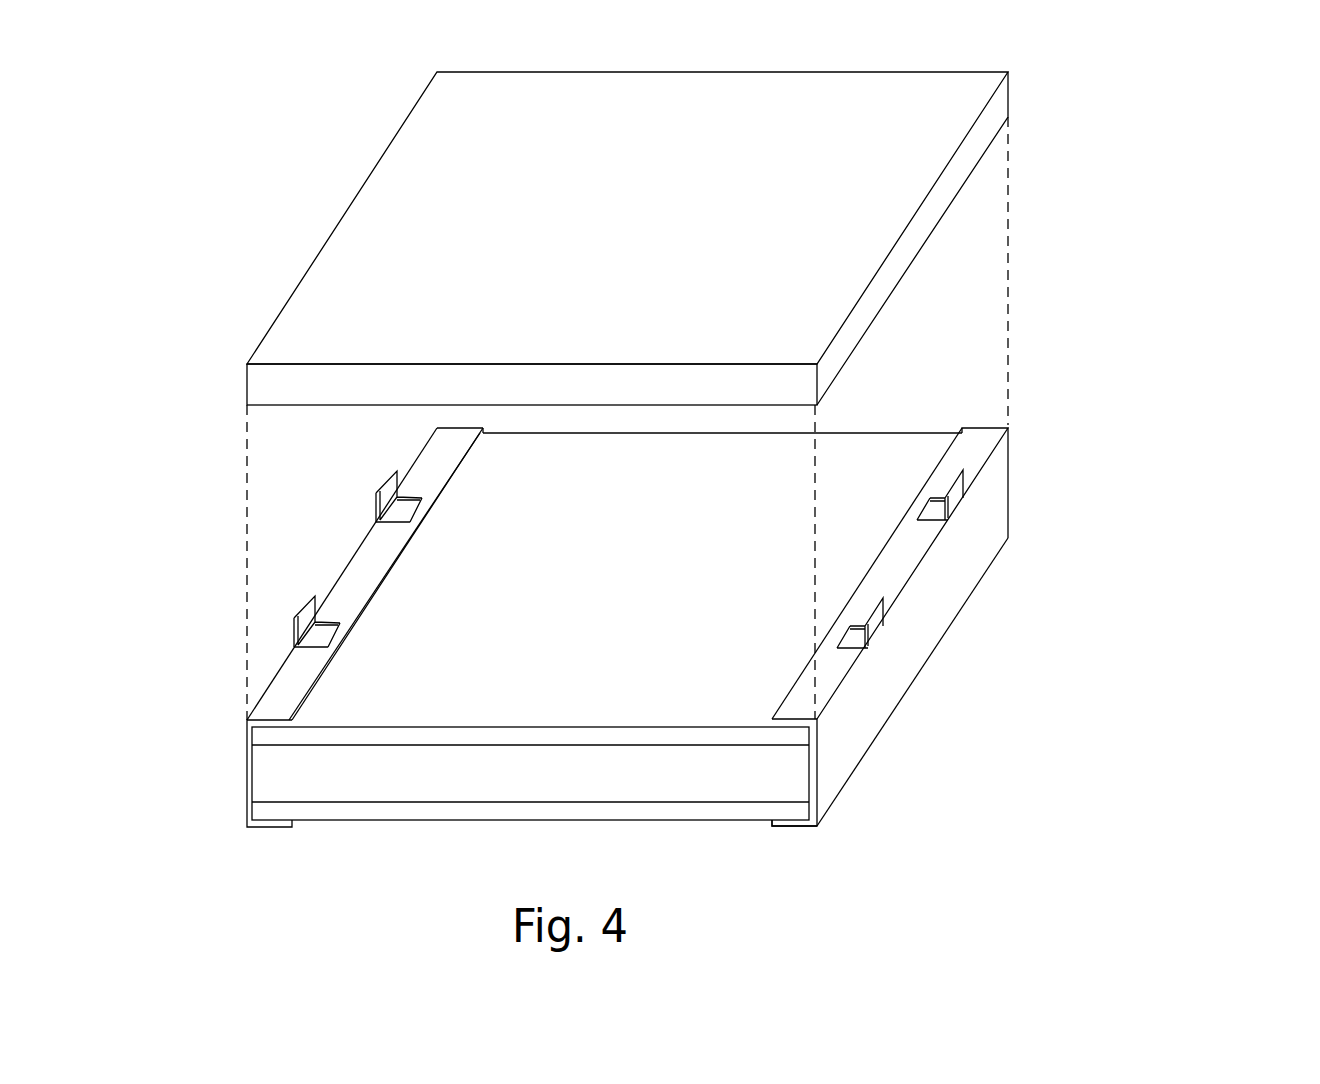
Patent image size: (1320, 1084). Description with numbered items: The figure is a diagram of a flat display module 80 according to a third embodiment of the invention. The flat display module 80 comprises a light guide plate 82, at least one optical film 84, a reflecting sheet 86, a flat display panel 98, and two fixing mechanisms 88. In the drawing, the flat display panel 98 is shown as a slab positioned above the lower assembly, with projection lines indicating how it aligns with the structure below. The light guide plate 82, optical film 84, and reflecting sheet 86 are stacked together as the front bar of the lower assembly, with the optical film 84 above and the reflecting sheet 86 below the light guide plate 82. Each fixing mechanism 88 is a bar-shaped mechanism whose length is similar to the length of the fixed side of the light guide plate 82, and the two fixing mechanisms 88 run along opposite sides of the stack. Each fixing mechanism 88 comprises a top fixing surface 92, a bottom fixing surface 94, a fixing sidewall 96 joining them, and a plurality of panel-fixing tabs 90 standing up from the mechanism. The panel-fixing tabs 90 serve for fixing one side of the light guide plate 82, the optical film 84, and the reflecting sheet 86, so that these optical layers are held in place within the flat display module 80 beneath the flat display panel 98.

The flat display module 80 is at (1132, 137).
The light guide plate 82 is at (267, 778).
The optical film 84 is at (262, 738).
The reflecting sheet 86 is at (325, 813).
The fixing mechanism 88 is at (238, 662).
The panel-fixing tab 90 is at (387, 494).
The top fixing surface 92 is at (988, 435).
The bottom fixing surface 94 is at (793, 828).
The fixing sidewall 96 is at (990, 507).
The flat display panel 98 is at (342, 268).